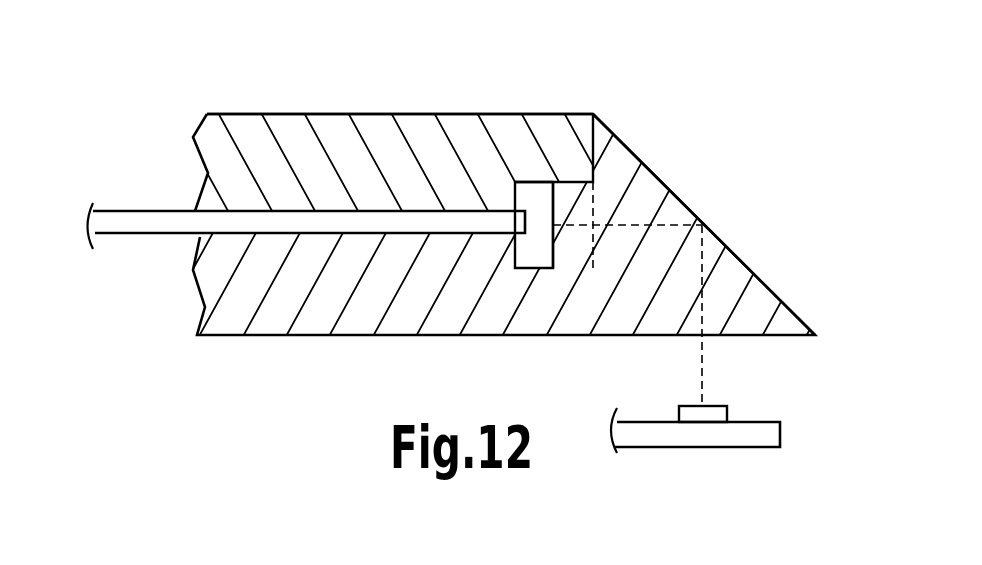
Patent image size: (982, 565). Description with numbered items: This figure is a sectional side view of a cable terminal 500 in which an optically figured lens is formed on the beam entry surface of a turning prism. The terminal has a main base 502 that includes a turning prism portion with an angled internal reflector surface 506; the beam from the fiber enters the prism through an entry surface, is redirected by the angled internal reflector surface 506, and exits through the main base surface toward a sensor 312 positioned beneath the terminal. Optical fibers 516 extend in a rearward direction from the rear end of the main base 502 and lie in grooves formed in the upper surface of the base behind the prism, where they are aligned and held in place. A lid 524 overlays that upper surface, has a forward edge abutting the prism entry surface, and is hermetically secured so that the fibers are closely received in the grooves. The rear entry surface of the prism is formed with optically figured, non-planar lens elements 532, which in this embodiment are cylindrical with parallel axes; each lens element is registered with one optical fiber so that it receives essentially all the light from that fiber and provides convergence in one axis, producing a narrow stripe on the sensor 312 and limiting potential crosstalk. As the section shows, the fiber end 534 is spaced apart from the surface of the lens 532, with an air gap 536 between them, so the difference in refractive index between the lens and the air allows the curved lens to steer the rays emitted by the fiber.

The cable terminal 500 is at (680, 100).
The main base 502 is at (303, 340).
The angled internal reflector surface 506 is at (751, 272).
The optical fibers 516 is at (152, 210).
The lid 524 is at (321, 110).
The lens elements 532 is at (537, 182).
The fiber end 534 is at (545, 208).
The air gap 536 is at (527, 212).
The sensor 312 is at (717, 405).